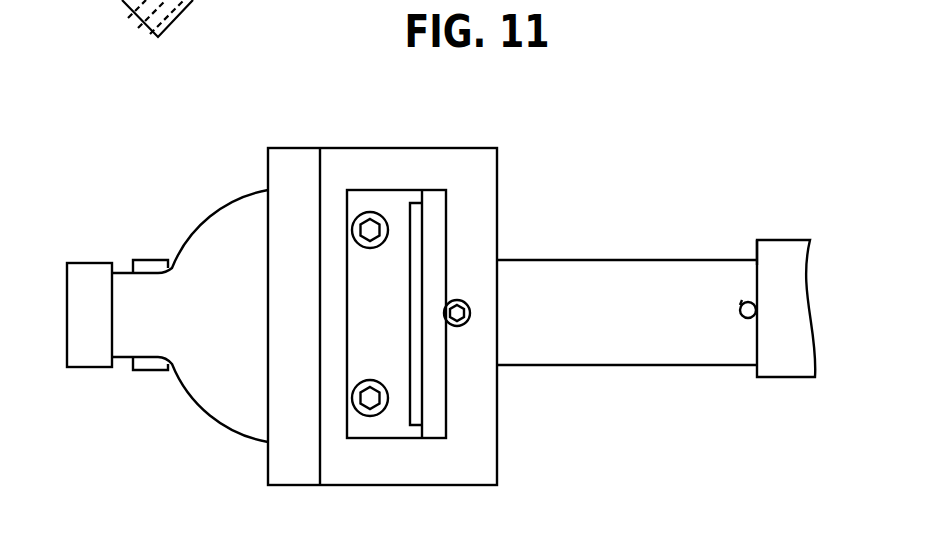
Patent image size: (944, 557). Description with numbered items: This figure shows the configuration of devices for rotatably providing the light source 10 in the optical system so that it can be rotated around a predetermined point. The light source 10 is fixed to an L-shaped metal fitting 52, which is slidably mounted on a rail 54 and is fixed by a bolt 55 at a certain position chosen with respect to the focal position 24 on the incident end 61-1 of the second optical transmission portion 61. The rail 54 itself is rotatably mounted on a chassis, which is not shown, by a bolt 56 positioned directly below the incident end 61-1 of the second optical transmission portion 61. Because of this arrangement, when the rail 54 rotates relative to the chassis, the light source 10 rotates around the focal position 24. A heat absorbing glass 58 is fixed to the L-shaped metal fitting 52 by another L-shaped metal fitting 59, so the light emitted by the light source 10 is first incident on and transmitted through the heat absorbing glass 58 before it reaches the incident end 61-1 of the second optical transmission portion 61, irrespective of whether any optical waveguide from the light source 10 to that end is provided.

The light source 10 is at (185, 231).
The L-shaped metal fitting 52 is at (307, 485).
The heat absorbing glass 58 is at (408, 217).
The another L-shaped metal fitting 59 is at (405, 190).
The bolt 55 is at (463, 333).
The rail 54 is at (573, 366).
The bolt 56 is at (742, 300).
The focal position 24 is at (743, 320).
The second optical transmission portion 61 is at (773, 380).
The incident end 61-1 is at (757, 240).